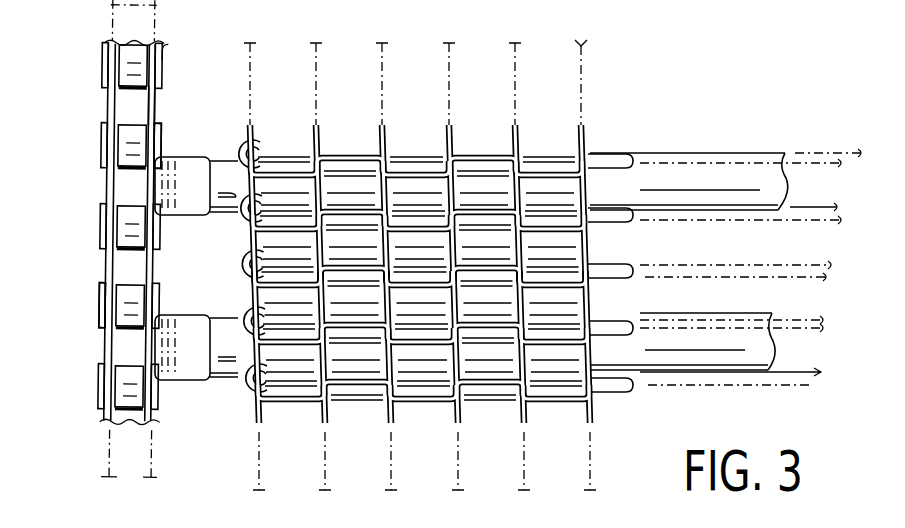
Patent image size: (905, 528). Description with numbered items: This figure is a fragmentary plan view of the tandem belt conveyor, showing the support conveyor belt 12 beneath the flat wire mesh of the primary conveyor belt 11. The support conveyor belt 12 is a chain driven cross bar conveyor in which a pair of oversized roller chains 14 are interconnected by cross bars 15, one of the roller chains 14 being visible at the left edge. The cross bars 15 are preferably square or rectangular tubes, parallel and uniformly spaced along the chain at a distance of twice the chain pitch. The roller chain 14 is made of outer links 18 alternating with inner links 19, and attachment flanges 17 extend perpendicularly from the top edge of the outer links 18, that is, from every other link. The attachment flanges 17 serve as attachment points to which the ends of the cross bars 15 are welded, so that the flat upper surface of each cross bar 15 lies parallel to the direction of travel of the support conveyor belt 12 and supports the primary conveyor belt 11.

The primary conveyor belt 11 is at (251, 415).
The support conveyor belt 12 is at (85, 134).
The roller chain 14 is at (101, 303).
The cross bar 15 is at (703, 152).
The attachment flange 17 is at (226, 216).
The outer link 18 is at (158, 144).
The inner link 19 is at (158, 104).